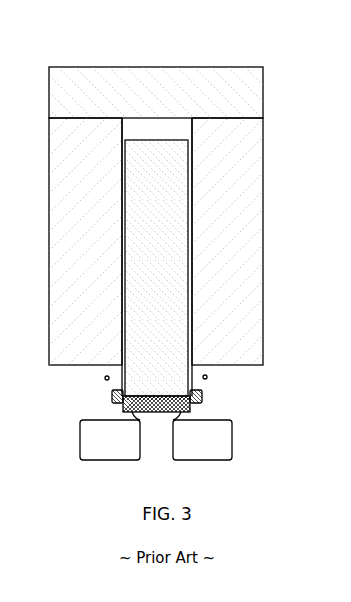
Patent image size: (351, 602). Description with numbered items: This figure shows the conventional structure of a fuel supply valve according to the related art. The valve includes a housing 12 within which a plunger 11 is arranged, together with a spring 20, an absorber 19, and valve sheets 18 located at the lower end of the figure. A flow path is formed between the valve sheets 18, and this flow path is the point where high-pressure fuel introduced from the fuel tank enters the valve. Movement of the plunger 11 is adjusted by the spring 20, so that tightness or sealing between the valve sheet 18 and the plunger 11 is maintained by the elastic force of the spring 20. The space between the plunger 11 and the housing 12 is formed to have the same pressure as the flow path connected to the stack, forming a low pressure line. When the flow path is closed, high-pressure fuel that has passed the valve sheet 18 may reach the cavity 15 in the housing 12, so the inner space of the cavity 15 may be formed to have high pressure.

The plunger 11 is at (173, 236).
The housing 12 is at (250, 282).
The cavity 15 is at (152, 127).
The valve sheet 18 is at (80, 444).
The absorber 19 is at (202, 403).
The spring 20 is at (207, 380).